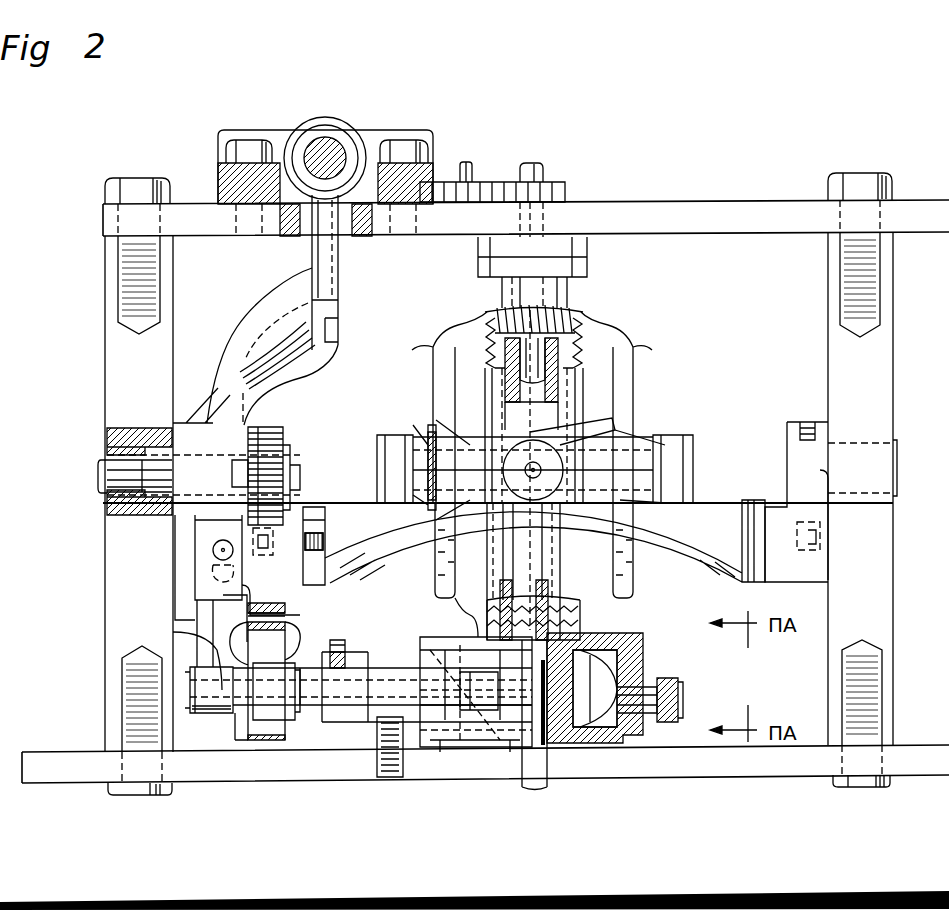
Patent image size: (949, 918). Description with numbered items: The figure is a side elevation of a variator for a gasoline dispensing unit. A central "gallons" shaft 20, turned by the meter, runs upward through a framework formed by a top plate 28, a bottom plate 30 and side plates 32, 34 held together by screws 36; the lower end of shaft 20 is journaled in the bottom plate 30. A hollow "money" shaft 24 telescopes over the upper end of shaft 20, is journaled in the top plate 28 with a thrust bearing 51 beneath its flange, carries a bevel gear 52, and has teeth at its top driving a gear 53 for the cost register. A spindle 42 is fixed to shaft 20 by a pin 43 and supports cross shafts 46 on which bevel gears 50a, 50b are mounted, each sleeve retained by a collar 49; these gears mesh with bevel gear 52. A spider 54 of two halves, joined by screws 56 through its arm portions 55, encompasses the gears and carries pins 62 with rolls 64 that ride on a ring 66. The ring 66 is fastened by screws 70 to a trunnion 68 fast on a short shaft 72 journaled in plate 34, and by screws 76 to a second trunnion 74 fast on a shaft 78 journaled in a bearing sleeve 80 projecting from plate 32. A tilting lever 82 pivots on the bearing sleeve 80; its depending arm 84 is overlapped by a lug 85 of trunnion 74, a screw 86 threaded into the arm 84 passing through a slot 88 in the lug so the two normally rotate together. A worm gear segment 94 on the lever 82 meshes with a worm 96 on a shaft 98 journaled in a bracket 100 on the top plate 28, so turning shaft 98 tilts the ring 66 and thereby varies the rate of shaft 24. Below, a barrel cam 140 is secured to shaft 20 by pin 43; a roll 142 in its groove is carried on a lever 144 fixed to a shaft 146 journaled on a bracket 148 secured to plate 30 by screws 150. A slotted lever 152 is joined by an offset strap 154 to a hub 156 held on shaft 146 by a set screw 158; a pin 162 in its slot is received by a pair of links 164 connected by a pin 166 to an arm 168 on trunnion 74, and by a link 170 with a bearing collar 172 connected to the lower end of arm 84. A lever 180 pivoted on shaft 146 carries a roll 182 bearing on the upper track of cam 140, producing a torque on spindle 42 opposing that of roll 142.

The central shaft 20 is at (545, 170).
The money shaft 24 is at (565, 186).
The top plate 28 is at (684, 210).
The bottom plate 30 is at (80, 752).
The side plate 32 is at (105, 631).
The side plate 34 is at (893, 356).
The screws 36 is at (106, 192).
The spindle 42 is at (560, 575).
The pin 43 is at (598, 672).
The cross shafts 46 is at (693, 460).
The collar 49 is at (380, 435).
The bevel gear 50a is at (475, 312).
The bevel gear 50b is at (608, 312).
The thrust bearing 51 is at (587, 245).
The bevel gear 52 is at (567, 290).
The gear 53 is at (480, 172).
The spider 54 is at (432, 345).
The arm portions 55 is at (540, 432).
The screws 56 is at (425, 430).
The pins 62 is at (541, 474).
The rolls 64 is at (563, 460).
The ring 66 is at (757, 500).
The trunnion 68 is at (795, 585).
The screws 70 is at (822, 548).
The short shaft 72 is at (787, 452).
The trunnion 74 is at (340, 518).
The screws 76 is at (258, 558).
The shaft 78 is at (107, 447).
The bearing sleeve 80 is at (107, 512).
The tilting lever 82 is at (303, 370).
The depending arm 84 is at (200, 604).
The lug 85 is at (195, 580).
The screw 86 is at (228, 540).
The slot 88 is at (215, 564).
The worm gear segment 94 is at (338, 285).
The worm 96 is at (325, 118).
The shaft 98 is at (340, 145).
The bracket 100 is at (433, 130).
The barrel cam 140 is at (628, 633).
The roll 142 is at (455, 747).
The lever 144 is at (410, 637).
The shaft 146 is at (462, 645).
The bracket 148 is at (372, 652).
The screws 150 is at (375, 735).
The slotted lever 152 is at (288, 608).
The offset strap 154 is at (290, 728).
The hub 156 is at (305, 715).
The set screw 158 is at (335, 640).
The pin 162 is at (260, 700).
The links 164 is at (285, 440).
The pin 166 is at (293, 460).
The arm 168 is at (302, 472).
The link 170 is at (238, 712).
The bearing collar 172 is at (195, 640).
The lever 180 is at (686, 700).
The roll 182 is at (645, 687).